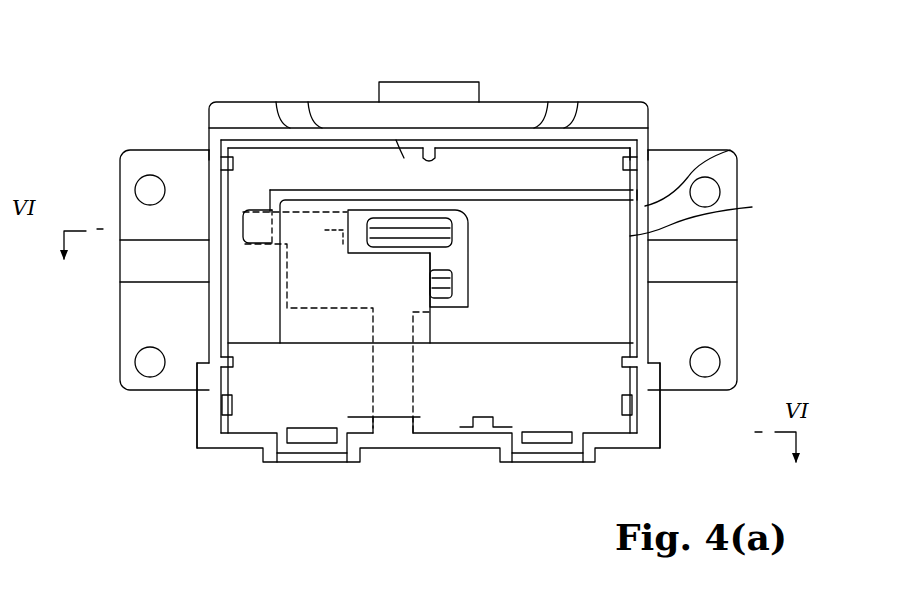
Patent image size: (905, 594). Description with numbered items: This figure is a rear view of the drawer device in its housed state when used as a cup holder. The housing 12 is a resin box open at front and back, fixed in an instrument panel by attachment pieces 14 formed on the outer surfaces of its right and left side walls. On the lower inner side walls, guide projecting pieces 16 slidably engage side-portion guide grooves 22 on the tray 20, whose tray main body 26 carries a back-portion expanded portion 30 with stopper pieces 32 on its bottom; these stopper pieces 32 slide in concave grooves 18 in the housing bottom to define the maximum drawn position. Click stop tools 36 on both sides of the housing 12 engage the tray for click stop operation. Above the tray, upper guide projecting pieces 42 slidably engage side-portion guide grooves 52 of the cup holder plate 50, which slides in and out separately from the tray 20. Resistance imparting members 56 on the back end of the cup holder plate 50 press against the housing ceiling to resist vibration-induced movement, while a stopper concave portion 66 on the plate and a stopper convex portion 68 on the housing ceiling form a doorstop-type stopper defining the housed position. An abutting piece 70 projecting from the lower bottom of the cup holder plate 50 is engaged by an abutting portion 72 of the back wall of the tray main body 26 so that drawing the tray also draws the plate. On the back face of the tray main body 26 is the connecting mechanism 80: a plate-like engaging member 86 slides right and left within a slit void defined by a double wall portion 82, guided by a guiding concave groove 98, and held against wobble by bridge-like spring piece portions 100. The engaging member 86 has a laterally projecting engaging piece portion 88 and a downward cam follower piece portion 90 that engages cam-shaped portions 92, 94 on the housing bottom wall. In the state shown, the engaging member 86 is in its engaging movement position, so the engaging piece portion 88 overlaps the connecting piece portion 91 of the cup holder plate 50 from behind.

The housing 12 is at (618, 110).
The attachment piece 14 is at (687, 160).
The guide projecting piece 16 is at (633, 365).
The concave groove 18 is at (556, 452).
The tray 20 is at (602, 287).
The side-portion guide groove 22 is at (622, 378).
The tray main body 26 is at (612, 325).
The back-portion expanded portion 30 is at (458, 395).
The stopper piece 32 is at (536, 444).
The click stop tool 36 is at (630, 405).
The guide projecting piece 42 is at (636, 160).
The cup holder plate 50 is at (498, 166).
The side-portion guide groove 52 is at (624, 162).
The resistance imparting member 56 is at (523, 145).
The stopper concave portion 66 is at (402, 155).
The stopper convex portion 68 is at (427, 155).
The abutting piece 70 is at (730, 152).
The abutting portion 72 is at (752, 207).
The connecting mechanism 80 is at (280, 192).
The double wall portion 82 is at (447, 275).
The engaging member 86 is at (460, 228).
The engaging piece portion 88 is at (233, 228).
The cam follower piece portion 90 is at (393, 430).
The connecting piece portion 91 is at (242, 213).
The cam-shaped portion 92 is at (366, 432).
The cam-shaped portion 94 is at (419, 432).
The guiding concave groove 98 is at (412, 272).
The bridge-like spring piece portion 100 is at (443, 288).